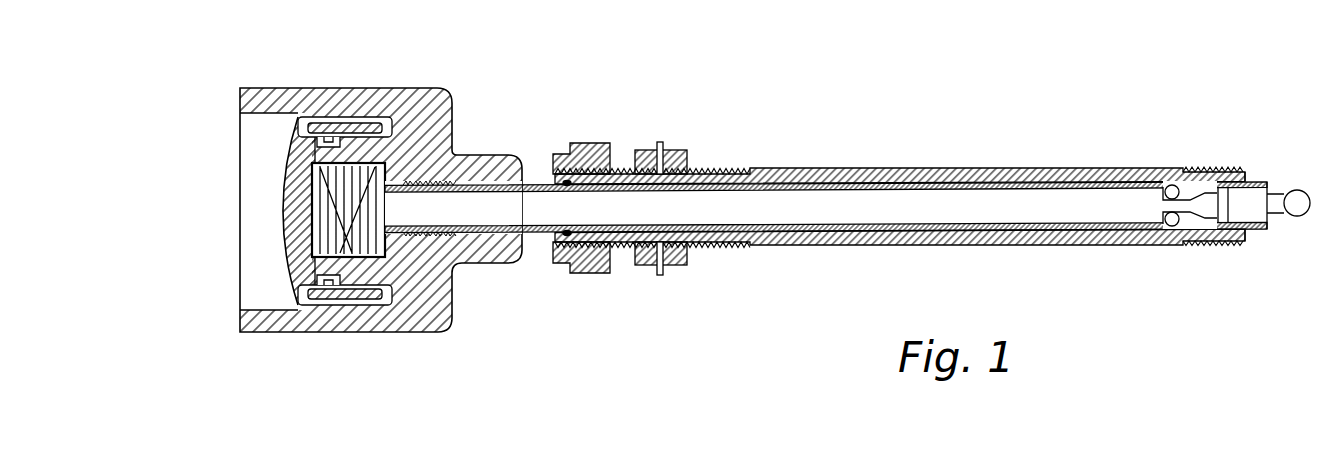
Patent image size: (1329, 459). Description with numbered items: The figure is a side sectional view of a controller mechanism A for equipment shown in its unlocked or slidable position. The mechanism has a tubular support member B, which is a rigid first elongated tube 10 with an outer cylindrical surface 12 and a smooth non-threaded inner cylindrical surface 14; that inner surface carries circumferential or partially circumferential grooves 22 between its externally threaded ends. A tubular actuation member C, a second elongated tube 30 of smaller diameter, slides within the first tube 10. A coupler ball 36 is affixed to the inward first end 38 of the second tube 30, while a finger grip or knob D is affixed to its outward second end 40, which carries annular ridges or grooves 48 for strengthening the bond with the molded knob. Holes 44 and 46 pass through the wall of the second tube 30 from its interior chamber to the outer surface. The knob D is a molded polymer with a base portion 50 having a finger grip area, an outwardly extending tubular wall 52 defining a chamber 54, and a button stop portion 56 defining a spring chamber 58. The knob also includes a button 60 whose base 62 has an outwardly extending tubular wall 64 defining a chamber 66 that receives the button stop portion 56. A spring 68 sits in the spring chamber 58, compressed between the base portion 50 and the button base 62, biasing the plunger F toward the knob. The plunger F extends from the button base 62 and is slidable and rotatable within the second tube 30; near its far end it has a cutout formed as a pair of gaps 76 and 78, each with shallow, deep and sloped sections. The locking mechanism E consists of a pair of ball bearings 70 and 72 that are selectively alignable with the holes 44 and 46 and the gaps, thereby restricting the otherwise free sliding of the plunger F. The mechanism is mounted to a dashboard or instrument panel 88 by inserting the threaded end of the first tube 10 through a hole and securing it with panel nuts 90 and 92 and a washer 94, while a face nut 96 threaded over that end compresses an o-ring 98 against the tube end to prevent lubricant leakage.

The first elongated tube 10 is at (900, 205).
The outer cylindrical surface 12 is at (900, 205).
The inner cylindrical surface 14 is at (826, 248).
The grooves 22 is at (826, 206).
The second elongated tube 30 is at (826, 206).
The coupler ball 36 is at (1295, 200).
The first end 38 is at (1292, 219).
The second end 40 is at (306, 242).
The hole 44 is at (1168, 147).
The hole 46 is at (1166, 258).
The annular ridges or grooves 48 is at (342, 232).
The base portion 50 is at (342, 232).
The tubular wall 52 is at (342, 232).
The chamber 54 is at (342, 232).
The button stop portion 56 is at (362, 273).
The spring chamber 58 is at (355, 163).
The button 60 is at (342, 256).
The base 62 is at (238, 216).
The tubular wall 64 is at (333, 295).
The chamber 66 is at (327, 120).
The spring 68 is at (342, 232).
The ball bearing 70 is at (1175, 184).
The ball bearing 72 is at (1172, 227).
The gap 76 is at (1227, 167).
The gap 78 is at (1222, 282).
The instrument panel 88 is at (648, 211).
The panel nut 90 is at (702, 238).
The panel nut 92 is at (694, 238).
The washer 94 is at (663, 276).
The face nut 96 is at (568, 237).
The o-ring 98 is at (602, 274).
The controller mechanism A is at (900, 205).
The tubular support member B is at (900, 161).
The tubular actuation member C is at (942, 182).
The knob D is at (447, 349).
The locking mechanism E is at (1200, 242).
The plunger F is at (1094, 225).